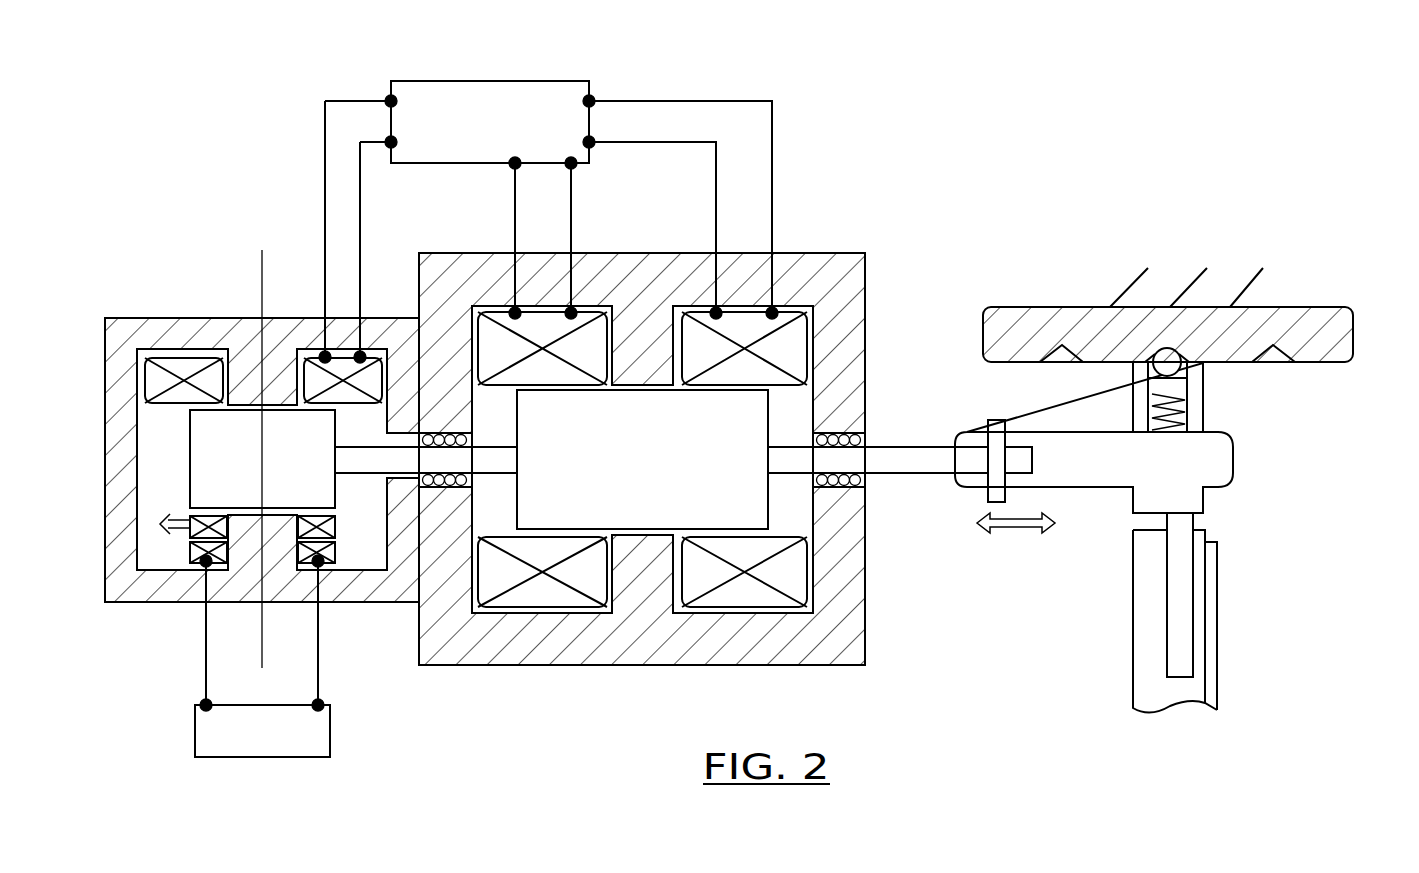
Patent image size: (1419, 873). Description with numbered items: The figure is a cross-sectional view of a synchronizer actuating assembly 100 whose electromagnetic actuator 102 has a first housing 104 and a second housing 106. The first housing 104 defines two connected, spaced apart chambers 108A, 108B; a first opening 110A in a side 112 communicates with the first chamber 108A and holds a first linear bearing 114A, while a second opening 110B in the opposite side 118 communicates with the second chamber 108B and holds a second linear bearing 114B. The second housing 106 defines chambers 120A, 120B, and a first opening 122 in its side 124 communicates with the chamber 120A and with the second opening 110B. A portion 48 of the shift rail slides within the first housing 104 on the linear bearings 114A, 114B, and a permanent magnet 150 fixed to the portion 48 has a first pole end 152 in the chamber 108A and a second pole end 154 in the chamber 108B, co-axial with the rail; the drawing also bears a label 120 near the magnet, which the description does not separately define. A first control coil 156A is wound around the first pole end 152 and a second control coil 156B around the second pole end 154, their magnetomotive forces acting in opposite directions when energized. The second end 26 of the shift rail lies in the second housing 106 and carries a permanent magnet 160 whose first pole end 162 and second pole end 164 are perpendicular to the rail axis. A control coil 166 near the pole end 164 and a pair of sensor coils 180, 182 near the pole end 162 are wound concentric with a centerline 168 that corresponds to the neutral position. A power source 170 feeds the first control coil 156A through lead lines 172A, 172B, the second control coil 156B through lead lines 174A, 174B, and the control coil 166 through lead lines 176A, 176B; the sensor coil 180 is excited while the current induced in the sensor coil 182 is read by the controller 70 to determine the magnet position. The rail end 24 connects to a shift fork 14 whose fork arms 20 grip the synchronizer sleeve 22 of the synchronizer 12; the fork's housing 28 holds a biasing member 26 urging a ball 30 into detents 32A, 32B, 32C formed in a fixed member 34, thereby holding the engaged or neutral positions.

The synchronizer actuating assembly 100 is at (1098, 97).
The electromagnetic actuator 102 is at (868, 192).
The first housing 104 is at (868, 278).
The second housing 106 is at (285, 318).
The first chamber 108A is at (806, 402).
The second chamber 108B is at (480, 608).
The first opening 110A is at (867, 442).
The second opening 110B is at (478, 440).
The side 112 is at (866, 330).
The first linear bearing 114A is at (868, 475).
The second linear bearing 114B is at (472, 480).
The side 118 is at (419, 272).
The rotor pole 120 is at (790, 477).
The first chamber 120A is at (357, 548).
The second chamber 120B is at (168, 562).
The first opening 122 is at (390, 478).
The side 124 is at (425, 345).
The permanent magnet 150 is at (626, 475).
The first pole end 152 is at (750, 515).
The second pole end 154 is at (543, 515).
The first control coil 156A is at (746, 318).
The second control coil 156B is at (543, 318).
The permanent magnet 160 is at (193, 453).
The first pole end 162 is at (215, 493).
The second pole end 164 is at (208, 435).
The control coil 166 is at (178, 358).
The centerline 168 is at (258, 266).
The power source 170 is at (470, 136).
The first lead line 172A is at (662, 142).
The second lead line 172B is at (724, 101).
The first lead line 174A is at (515, 197).
The second lead line 174B is at (571, 205).
The first lead line 176A is at (325, 158).
The second lead line 176B is at (360, 205).
The sensor coil 180 is at (190, 525).
The sensor coil 182 is at (190, 553).
The controller 70 is at (247, 747).
The second end 26 is at (368, 458).
The first end 24 is at (982, 452).
The shift fork 14 is at (1238, 462).
The synchronizer 12 is at (1214, 544).
The synchronizer sleeve 22 is at (1198, 573).
The fork arms 20 is at (1175, 665).
The housing 28 is at (1206, 385).
The ball 30 is at (1172, 350).
The member 34 is at (1355, 332).
The detent 32A is at (1058, 365).
The detent 32B is at (1167, 348).
The detent 32C is at (1268, 365).
The portion of the shift rail 48 is at (792, 452).